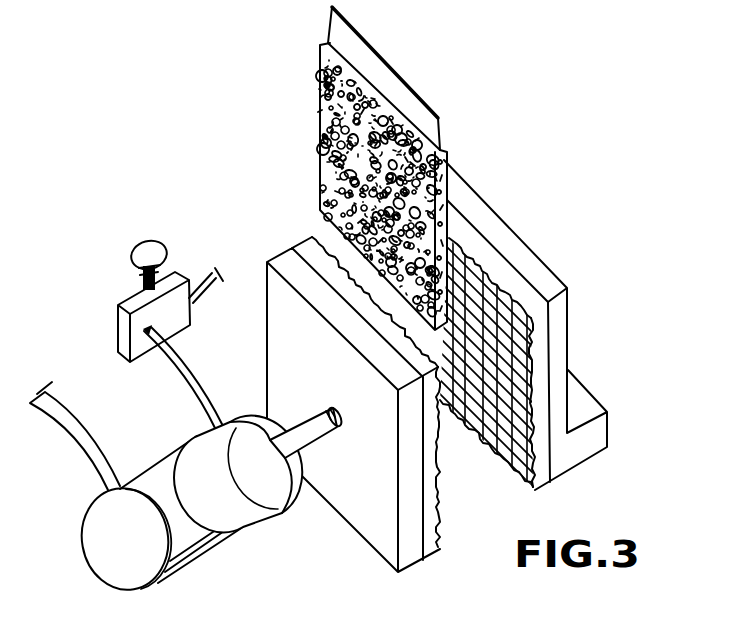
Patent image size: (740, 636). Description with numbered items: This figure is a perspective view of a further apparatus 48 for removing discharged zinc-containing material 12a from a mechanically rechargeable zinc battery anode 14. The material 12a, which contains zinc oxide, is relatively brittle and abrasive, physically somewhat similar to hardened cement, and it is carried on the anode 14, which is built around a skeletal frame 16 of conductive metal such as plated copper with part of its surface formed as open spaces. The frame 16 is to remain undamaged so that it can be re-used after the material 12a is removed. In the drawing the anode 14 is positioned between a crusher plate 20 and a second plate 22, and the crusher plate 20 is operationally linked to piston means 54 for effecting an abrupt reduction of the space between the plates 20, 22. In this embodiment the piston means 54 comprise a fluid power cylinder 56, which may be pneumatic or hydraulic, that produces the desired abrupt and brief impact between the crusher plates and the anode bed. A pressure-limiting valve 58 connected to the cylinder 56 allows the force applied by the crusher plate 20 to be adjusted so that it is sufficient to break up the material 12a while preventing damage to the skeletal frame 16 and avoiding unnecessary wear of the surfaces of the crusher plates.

The discharged zinc-containing material 12a is at (320, 157).
The mechanically rechargeable zinc battery anode 14 is at (300, 90).
The skeletal frame 16 is at (389, 72).
The crusher plate 20 is at (428, 534).
The plate 22 is at (483, 250).
The further apparatus 48 is at (680, 213).
The piston means 54 is at (235, 576).
The fluid power cylinder 56 is at (174, 556).
The pressure-limiting valve 58 is at (181, 272).